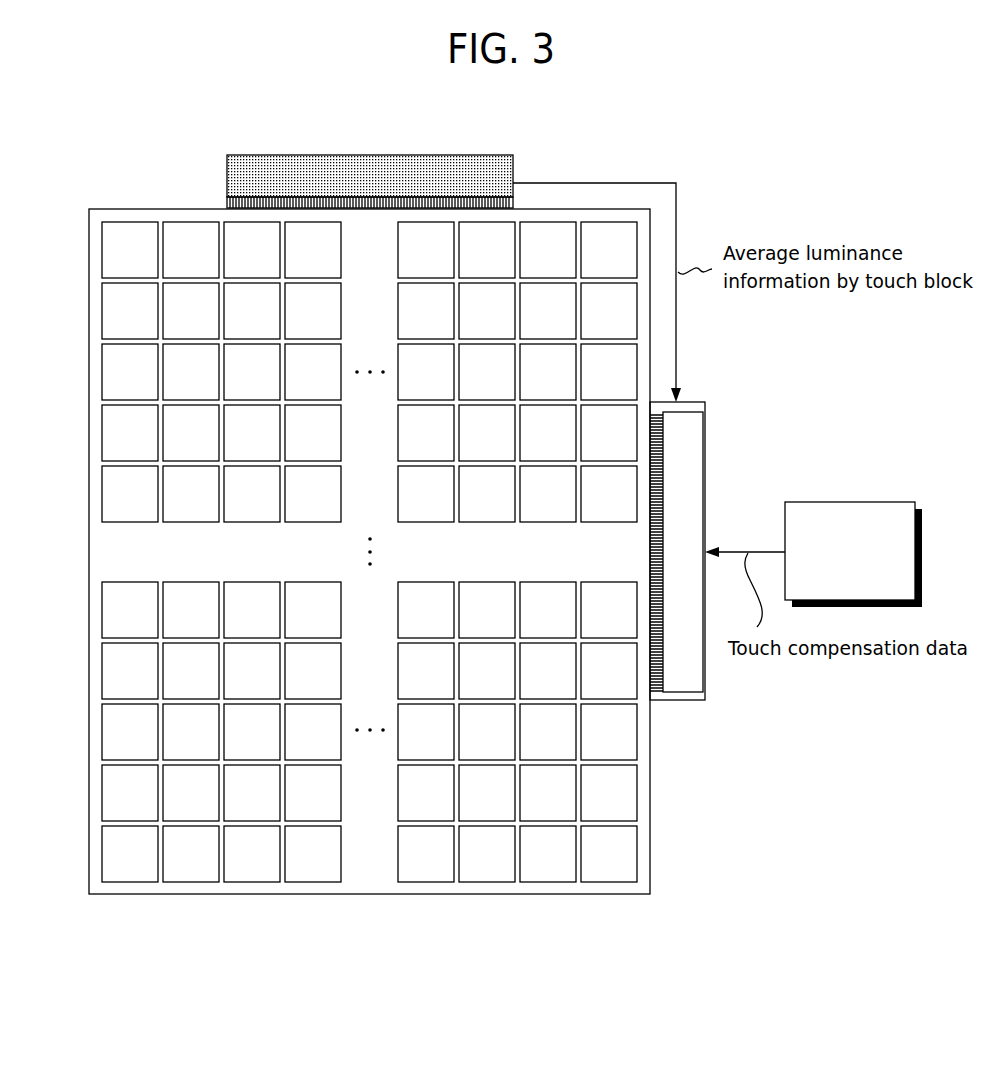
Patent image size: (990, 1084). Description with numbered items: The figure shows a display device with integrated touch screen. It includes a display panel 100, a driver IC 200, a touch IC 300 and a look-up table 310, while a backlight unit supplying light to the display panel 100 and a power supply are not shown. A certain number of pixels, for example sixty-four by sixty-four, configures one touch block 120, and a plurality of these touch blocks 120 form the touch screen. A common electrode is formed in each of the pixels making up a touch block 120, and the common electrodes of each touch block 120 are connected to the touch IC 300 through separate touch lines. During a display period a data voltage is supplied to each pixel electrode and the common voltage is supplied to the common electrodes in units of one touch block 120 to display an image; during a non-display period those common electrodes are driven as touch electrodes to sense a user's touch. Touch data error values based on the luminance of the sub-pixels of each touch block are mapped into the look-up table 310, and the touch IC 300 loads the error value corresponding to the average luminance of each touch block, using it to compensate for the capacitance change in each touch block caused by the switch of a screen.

The display panel 100 is at (89, 318).
The touch block 120 is at (122, 375).
The driver IC 200 is at (513, 170).
The touch IC 300 is at (700, 444).
The look-up table 310 is at (873, 502).